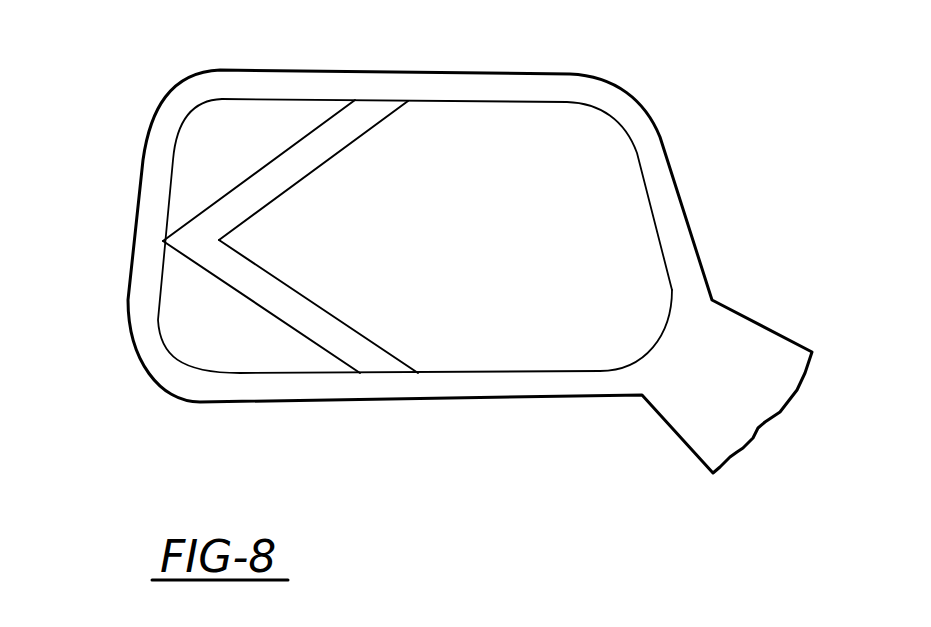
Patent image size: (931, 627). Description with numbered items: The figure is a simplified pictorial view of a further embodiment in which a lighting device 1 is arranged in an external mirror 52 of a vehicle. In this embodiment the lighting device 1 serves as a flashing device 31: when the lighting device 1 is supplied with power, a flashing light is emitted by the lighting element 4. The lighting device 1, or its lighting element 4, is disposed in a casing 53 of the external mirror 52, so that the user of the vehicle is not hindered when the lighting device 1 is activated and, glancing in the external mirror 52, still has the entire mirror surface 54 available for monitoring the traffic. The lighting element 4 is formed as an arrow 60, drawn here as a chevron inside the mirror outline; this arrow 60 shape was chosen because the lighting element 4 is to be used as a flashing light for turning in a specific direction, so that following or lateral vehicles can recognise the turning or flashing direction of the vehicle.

The lighting device 1 is at (442, 243).
The lighting element 4 is at (317, 130).
The flashing device 31 is at (197, 155).
The external mirror 52 is at (684, 106).
The casing 53 is at (560, 88).
The mirror surface 54 is at (532, 350).
The arrow 60 is at (330, 338).